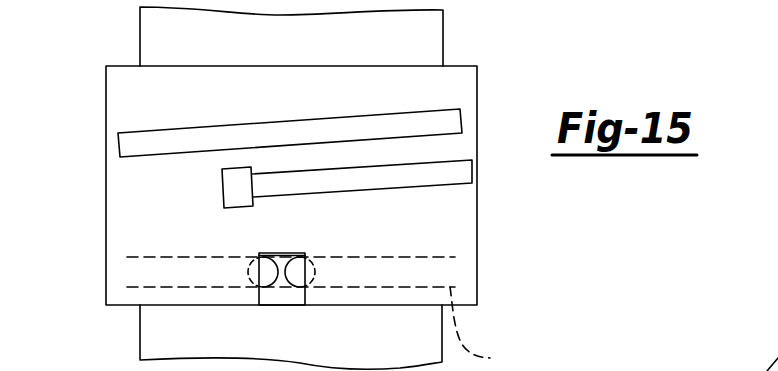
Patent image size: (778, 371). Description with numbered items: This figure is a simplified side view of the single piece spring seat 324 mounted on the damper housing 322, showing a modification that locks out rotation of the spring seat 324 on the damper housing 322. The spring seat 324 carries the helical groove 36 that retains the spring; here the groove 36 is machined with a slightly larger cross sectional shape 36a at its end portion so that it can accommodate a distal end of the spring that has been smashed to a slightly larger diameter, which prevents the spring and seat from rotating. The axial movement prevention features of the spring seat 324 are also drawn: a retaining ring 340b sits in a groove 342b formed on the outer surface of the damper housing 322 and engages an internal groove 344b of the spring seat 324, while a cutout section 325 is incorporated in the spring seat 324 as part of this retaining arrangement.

The damper housing 322 is at (428, 38).
The single piece spring seat 324 is at (448, 218).
The helical groove 36 is at (155, 137).
The larger cross sectional shape 36a is at (228, 179).
The retaining ring 340b is at (263, 263).
The groove 342b is at (282, 288).
The cutout section 325 is at (259, 296).
The internal groove 344b is at (491, 329).